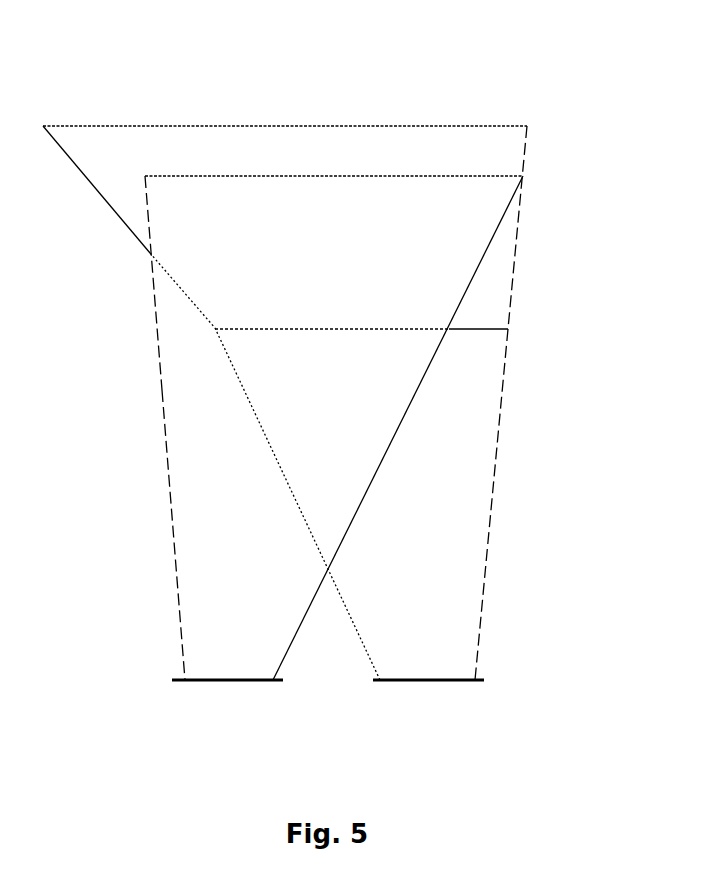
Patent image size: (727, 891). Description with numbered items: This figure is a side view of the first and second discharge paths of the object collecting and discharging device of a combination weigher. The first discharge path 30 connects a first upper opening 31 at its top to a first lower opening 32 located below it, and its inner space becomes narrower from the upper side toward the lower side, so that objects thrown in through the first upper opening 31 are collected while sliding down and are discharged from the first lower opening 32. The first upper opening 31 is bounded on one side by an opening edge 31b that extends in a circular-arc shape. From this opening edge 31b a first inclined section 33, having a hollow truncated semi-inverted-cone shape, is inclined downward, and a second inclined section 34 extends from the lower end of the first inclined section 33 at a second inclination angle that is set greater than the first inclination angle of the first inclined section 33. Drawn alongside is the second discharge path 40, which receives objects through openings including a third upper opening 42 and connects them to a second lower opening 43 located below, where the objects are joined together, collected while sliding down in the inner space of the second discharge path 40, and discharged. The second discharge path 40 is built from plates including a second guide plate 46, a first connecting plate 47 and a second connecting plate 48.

The first discharge path 30 is at (315, 356).
The first upper opening 31 is at (368, 126).
The opening edge 31b is at (270, 126).
The first lower opening 32 is at (445, 683).
The first inclined section 33 is at (497, 308).
The second inclined section 34 is at (483, 360).
The second discharge path 40 is at (287, 469).
The third upper opening 42 is at (341, 176).
The second lower opening 43 is at (233, 683).
The second guide plate 46 is at (190, 470).
The first connecting plate 47 is at (162, 388).
The second connecting plate 48 is at (400, 428).